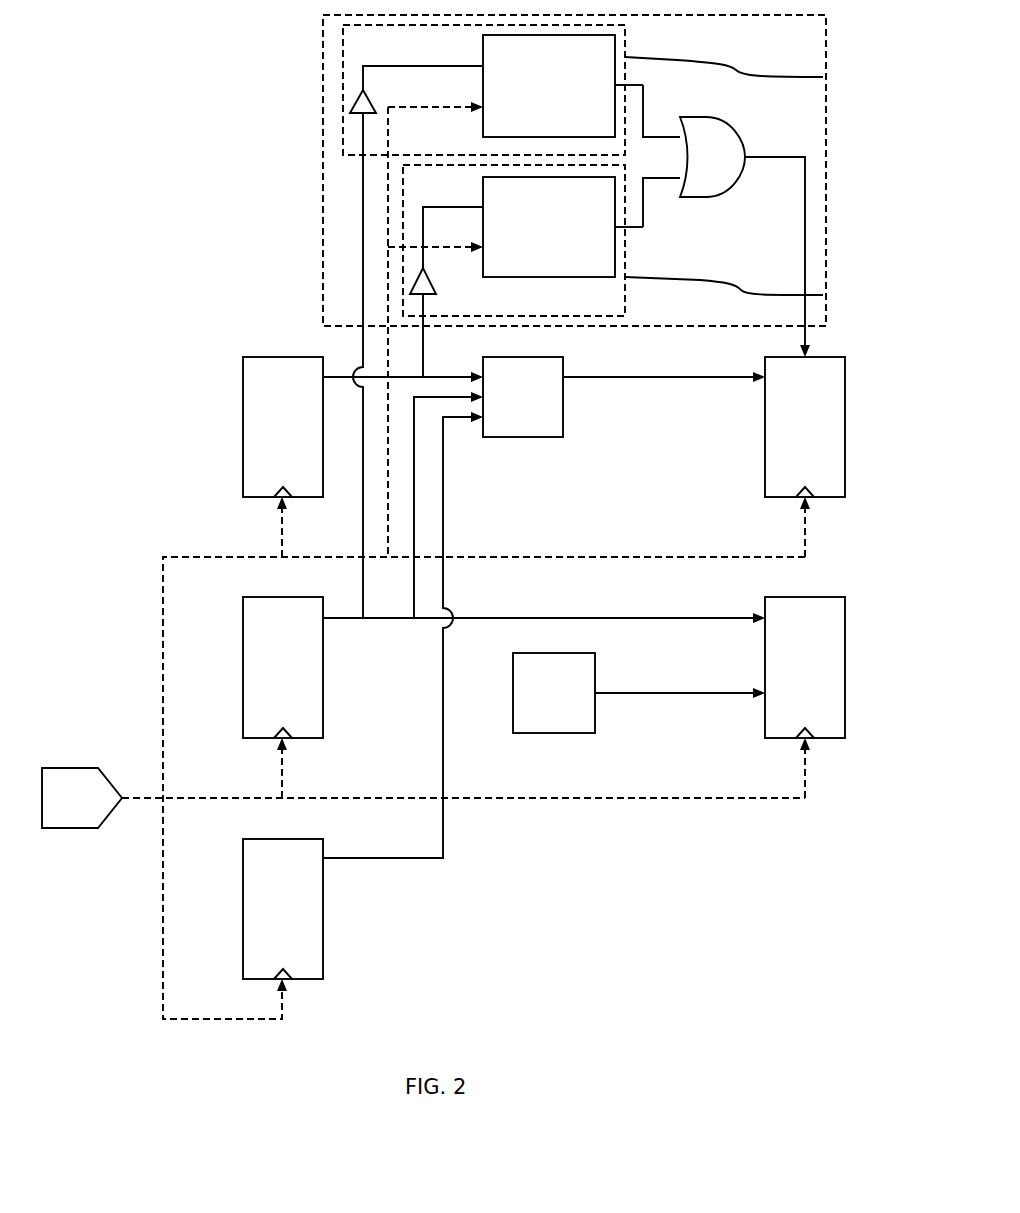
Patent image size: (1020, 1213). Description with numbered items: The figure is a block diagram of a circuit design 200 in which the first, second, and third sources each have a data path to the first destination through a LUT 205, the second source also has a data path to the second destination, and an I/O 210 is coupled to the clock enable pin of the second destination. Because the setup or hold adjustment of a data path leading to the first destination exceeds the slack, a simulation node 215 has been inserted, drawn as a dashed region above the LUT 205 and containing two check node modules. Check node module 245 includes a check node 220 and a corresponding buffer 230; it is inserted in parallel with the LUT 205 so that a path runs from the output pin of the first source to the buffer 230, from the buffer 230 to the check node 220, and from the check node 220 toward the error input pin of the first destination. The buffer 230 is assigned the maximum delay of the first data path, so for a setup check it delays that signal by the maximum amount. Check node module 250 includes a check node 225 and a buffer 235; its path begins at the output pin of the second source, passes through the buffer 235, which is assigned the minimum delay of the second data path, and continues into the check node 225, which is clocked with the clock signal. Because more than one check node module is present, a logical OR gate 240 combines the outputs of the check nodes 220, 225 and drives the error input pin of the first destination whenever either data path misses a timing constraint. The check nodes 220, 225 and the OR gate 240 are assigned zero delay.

The circuit design 200 is at (151, 186).
The LUT 205 is at (523, 397).
The I/O 210 is at (639, 693).
The simulation node 215 is at (323, 40).
The check node 220 is at (515, 240).
The check node 225 is at (493, 291).
The buffer 230 is at (412, 278).
The buffer 235 is at (352, 102).
The logical OR gate 240 is at (738, 221).
The check node module 245 is at (823, 295).
The check node module 250 is at (823, 77).